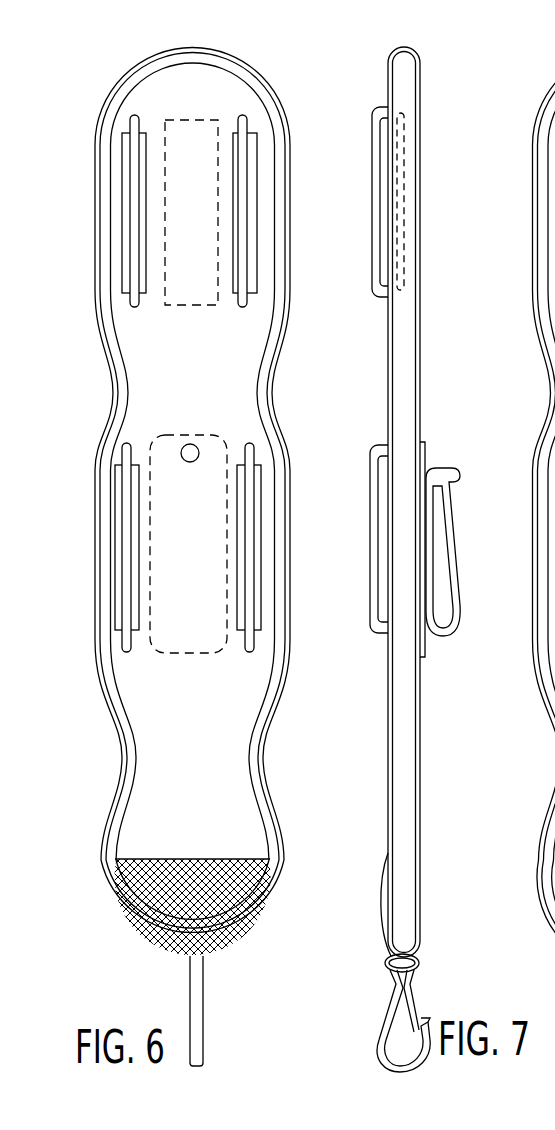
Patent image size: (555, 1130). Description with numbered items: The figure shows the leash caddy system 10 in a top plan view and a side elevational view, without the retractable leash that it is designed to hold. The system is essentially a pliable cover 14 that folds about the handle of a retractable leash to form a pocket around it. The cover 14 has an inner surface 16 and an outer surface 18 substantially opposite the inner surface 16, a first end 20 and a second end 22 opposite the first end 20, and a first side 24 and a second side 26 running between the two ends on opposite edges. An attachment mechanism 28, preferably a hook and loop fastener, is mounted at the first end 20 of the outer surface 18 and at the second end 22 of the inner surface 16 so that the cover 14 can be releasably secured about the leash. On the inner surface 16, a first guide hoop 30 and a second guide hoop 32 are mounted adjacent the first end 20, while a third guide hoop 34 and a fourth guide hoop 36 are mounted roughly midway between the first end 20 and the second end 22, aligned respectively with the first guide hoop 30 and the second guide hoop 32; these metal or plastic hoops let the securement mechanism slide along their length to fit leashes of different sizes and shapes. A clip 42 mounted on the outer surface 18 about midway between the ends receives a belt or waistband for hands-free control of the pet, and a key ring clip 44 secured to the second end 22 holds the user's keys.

In FIG. 6, the leash caddy system 10 is at (60, 68).
In FIG. 7, the leash caddy system 10 is at (478, 93).
In FIG. 6, the cover 14 is at (115, 734).
In FIG. 7, the cover 14 is at (416, 502).
In FIG. 6, the inner surface 16 is at (176, 701).
In FIG. 7, the inner surface 16 is at (388, 340).
In FIG. 7, the outer surface 18 is at (420, 362).
In FIG. 6, the first end 20 is at (202, 47).
In FIG. 6, the second end 22 is at (254, 960).
In FIG. 7, the second end 22 is at (544, 523).
In FIG. 6, the first side 24 is at (103, 313).
In FIG. 6, the second side 26 is at (290, 842).
In FIG. 6, the attachment mechanism 28 is at (222, 942).
In FIG. 7, the attachment mechanism 28 is at (390, 185).
In FIG. 6, the first guide hoop 30 is at (138, 122).
In FIG. 6, the second guide hoop 32 is at (252, 120).
In FIG. 7, the second guide hoop 32 is at (373, 157).
In FIG. 6, the third guide hoop 34 is at (123, 450).
In FIG. 6, the fourth guide hoop 36 is at (256, 458).
In FIG. 7, the fourth guide hoop 36 is at (370, 568).
In FIG. 7, the clip 42 is at (449, 528).
In FIG. 6, the key ring clip 44 is at (204, 1068).
In FIG. 7, the key ring clip 44 is at (420, 1068).